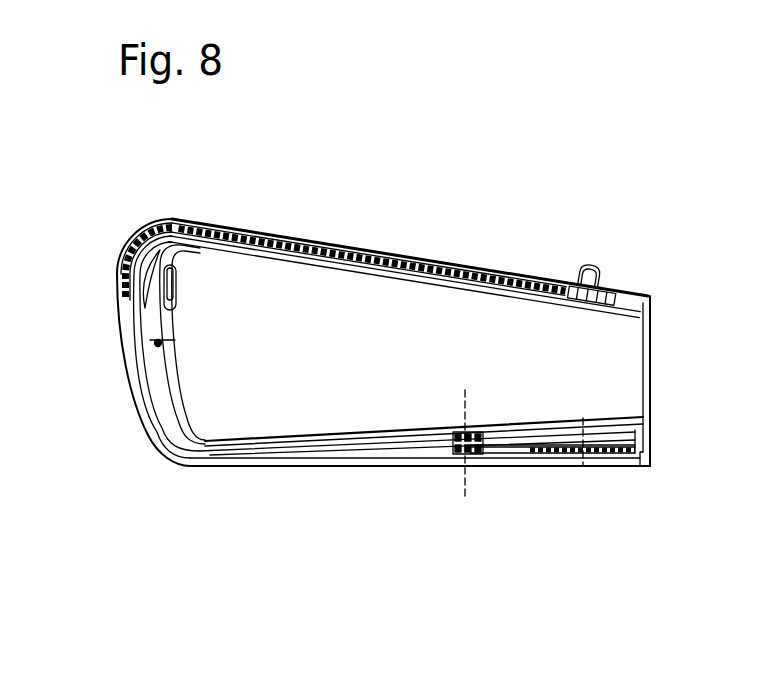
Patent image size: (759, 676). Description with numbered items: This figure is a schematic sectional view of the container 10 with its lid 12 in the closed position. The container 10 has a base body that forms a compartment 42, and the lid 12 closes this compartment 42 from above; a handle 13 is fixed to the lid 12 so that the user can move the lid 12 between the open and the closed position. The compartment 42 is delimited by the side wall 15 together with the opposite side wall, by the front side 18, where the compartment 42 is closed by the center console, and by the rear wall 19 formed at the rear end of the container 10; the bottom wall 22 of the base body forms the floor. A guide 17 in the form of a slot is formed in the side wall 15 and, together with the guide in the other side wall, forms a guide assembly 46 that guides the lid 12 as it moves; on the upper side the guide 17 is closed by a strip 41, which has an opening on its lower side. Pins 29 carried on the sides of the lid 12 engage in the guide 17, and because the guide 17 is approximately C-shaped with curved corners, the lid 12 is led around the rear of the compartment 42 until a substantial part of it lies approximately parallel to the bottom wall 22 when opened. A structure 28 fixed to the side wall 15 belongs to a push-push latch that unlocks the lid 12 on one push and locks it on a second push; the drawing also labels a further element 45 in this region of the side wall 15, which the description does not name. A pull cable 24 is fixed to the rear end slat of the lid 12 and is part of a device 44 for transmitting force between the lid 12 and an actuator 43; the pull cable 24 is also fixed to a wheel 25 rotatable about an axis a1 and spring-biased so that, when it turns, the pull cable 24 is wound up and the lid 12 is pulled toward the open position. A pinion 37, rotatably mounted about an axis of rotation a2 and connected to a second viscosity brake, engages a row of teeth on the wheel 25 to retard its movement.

The container 10 is at (542, 122).
The lid 12 is at (303, 236).
The handle 13 is at (583, 265).
The side wall 15 is at (480, 328).
The guide 17 is at (627, 291).
The front side 18 is at (651, 355).
The rear wall 19 is at (143, 378).
The bottom wall 22 is at (260, 466).
The pull cable 24 is at (373, 443).
The wheel 25 is at (613, 452).
The structure 28 is at (173, 260).
The pins 29 is at (347, 262).
The pinion 37 is at (473, 452).
The strip 41 is at (645, 323).
The compartment 42 is at (213, 382).
The actuator 43 is at (532, 500).
The device for transmitting force 44 is at (343, 450).
The lever 45 is at (155, 307).
The guide assembly 46 is at (208, 466).
The axis a1 is at (583, 472).
The axis of rotation a2 is at (462, 487).